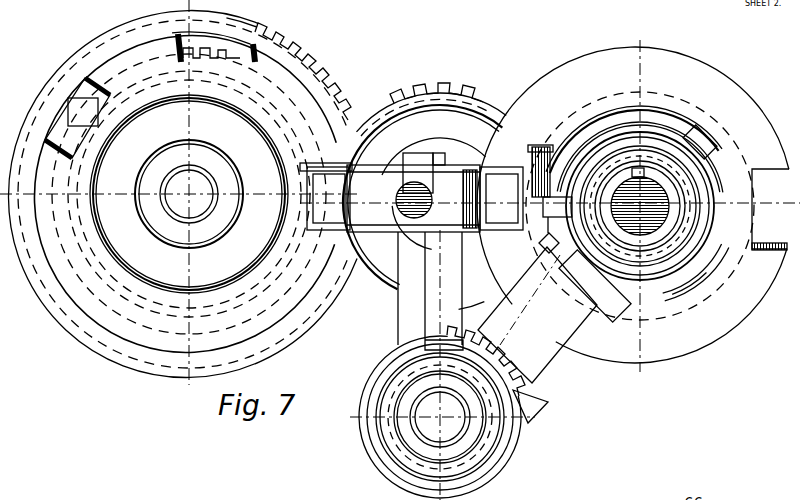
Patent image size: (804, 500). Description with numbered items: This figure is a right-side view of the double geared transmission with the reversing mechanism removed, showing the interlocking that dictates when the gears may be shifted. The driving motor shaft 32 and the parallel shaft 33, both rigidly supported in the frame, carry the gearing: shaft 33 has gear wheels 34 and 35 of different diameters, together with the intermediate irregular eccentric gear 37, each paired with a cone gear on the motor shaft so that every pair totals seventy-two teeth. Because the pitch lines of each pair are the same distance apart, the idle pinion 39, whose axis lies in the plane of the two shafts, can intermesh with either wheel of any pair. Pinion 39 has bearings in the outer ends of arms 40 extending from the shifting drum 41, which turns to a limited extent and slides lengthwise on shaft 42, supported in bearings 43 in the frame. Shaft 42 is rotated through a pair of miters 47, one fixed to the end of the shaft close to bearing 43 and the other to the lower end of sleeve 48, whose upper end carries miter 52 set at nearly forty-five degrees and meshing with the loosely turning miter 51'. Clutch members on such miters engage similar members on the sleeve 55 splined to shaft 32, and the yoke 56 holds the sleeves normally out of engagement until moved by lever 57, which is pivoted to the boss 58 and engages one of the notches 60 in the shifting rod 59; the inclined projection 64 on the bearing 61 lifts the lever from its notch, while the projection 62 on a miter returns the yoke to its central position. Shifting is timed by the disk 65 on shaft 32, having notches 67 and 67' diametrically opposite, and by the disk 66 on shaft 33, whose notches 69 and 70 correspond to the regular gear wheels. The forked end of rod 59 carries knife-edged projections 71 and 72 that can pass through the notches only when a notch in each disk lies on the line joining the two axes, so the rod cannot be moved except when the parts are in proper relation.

The motor shaft 32 is at (655, 202).
The shaft 33 is at (189, 194).
The gear wheel 34 is at (296, 62).
The gear wheel 35 is at (180, 56).
The intermediate irregular eccentric gear 37 is at (270, 32).
The intermediate pinion 39 is at (439, 201).
The arms 40 is at (430, 291).
The shifting drum 41 is at (356, 430).
The shaft 42 is at (440, 417).
The bearing 43 is at (512, 415).
The miter 47 is at (549, 402).
The sleeve 48 is at (520, 318).
The miter gear 51' is at (640, 206).
The miter 52 is at (620, 308).
The sleeve 55 is at (692, 266).
The yoke 56 is at (557, 215).
The lever 57 is at (540, 145).
The boss 58 is at (708, 146).
The shifting rod 59 is at (398, 236).
The notches 60 is at (405, 170).
The bearing 61 is at (397, 205).
The projection 62 is at (429, 198).
The inclined projection 64 is at (437, 158).
The disk 65 is at (618, 204).
The disk 66 is at (211, 215).
The notch 67 is at (608, 213).
The notch 67' is at (769, 259).
The notch 69 is at (312, 165).
The notch 70 is at (77, 118).
The projection 71 is at (501, 198).
The projection 72 is at (328, 198).